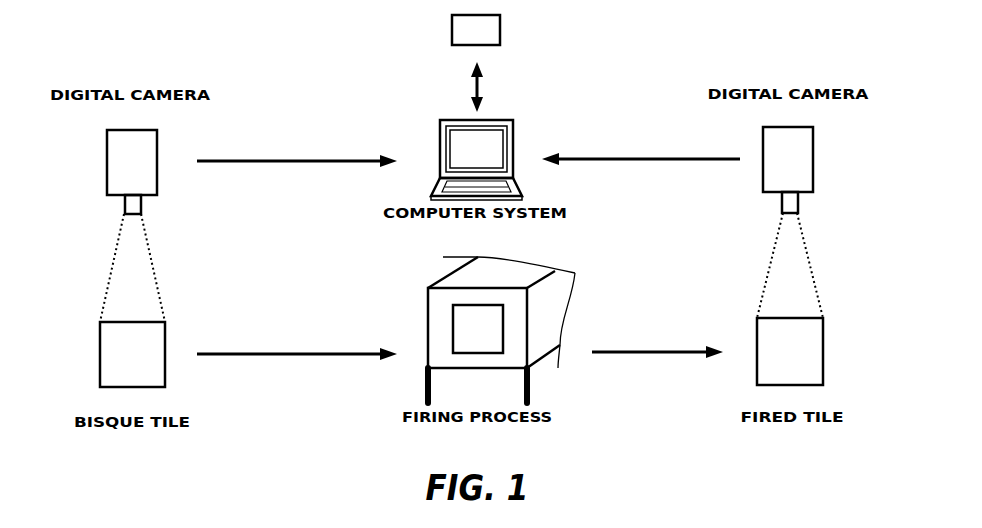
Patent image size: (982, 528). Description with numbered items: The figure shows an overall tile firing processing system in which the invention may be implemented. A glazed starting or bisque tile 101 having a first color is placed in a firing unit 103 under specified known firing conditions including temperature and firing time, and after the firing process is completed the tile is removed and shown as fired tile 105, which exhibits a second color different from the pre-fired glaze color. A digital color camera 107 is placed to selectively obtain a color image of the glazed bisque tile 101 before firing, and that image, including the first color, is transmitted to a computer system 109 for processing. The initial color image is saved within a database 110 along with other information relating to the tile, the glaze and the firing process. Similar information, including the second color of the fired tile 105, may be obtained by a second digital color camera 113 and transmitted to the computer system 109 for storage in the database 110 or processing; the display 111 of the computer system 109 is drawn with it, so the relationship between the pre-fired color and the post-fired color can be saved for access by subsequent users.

The glazed bisque tile 101 is at (100, 355).
The firing unit 103 is at (428, 288).
The fired tile 105 is at (823, 350).
The digital color camera 107 is at (157, 193).
The computer system 109 is at (473, 137).
The database 110 is at (452, 44).
The display 111 is at (478, 160).
The digital color camera 113 is at (763, 190).